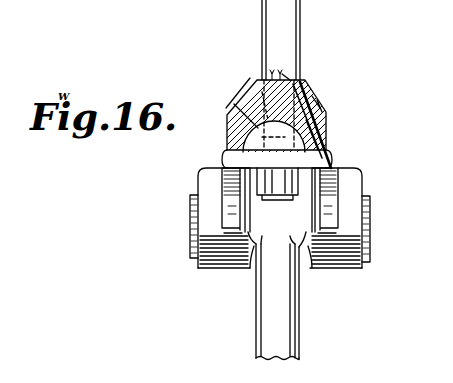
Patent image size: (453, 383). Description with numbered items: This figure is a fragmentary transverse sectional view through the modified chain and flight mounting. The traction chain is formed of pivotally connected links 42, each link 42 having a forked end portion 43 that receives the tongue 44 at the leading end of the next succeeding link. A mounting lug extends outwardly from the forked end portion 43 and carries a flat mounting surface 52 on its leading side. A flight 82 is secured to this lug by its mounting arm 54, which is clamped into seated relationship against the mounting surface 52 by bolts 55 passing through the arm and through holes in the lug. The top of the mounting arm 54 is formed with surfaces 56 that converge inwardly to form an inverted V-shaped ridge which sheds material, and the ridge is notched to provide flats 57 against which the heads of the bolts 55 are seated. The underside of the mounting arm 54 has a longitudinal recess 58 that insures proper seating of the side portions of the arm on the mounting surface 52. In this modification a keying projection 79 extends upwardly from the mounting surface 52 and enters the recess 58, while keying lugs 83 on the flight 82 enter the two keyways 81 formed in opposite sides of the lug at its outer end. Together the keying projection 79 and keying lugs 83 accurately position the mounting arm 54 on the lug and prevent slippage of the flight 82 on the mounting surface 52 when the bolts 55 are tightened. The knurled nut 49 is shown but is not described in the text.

The link 42 is at (300, 24).
The forked end portion 43 is at (199, 179).
The tongue 44 is at (258, 232).
The knurled nut 49 is at (190, 220).
The mounting surface 52 is at (242, 132).
The mounting arm 54 is at (300, 102).
The bolt 55 is at (278, 200).
The converging surface 56 is at (254, 108).
The flat 57 is at (255, 100).
The recess 58 is at (246, 115).
The keying projection 79 is at (326, 137).
The keyway 81 is at (300, 159).
The flight 82 is at (278, 72).
The keying lug 83 is at (236, 157).